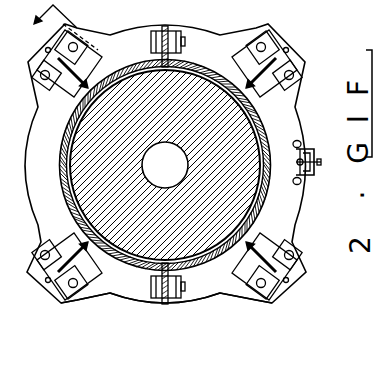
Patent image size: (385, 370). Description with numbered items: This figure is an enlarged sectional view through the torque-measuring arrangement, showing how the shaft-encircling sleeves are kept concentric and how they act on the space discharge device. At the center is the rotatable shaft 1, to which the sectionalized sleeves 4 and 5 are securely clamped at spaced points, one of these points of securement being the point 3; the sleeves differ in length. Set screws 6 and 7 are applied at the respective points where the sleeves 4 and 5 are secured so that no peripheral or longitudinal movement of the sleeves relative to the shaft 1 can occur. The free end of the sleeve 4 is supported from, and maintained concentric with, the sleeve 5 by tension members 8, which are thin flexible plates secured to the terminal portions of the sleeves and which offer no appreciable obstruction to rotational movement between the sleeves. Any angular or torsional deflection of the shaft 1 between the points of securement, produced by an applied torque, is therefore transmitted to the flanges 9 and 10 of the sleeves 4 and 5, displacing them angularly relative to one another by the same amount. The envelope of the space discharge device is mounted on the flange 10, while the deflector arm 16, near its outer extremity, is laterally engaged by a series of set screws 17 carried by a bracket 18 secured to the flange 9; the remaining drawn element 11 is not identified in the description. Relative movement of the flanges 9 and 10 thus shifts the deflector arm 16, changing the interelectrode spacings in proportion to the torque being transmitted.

The rotatable shaft 1 is at (165, 165).
The point of securement 3 is at (48, 20).
The sectionalized sleeve 4 is at (192, 303).
The sectionalized sleeve 5 is at (217, 68).
The set screw 6 is at (296, 208).
The set screw 7 is at (89, 89).
The tension member 8 is at (270, 72).
The flange 9 is at (45, 71).
The flange 10 is at (75, 268).
The clamp block 11 is at (250, 262).
The deflector arm 16 is at (295, 163).
The set screw 17 is at (314, 150).
The bracket 18 is at (295, 143).